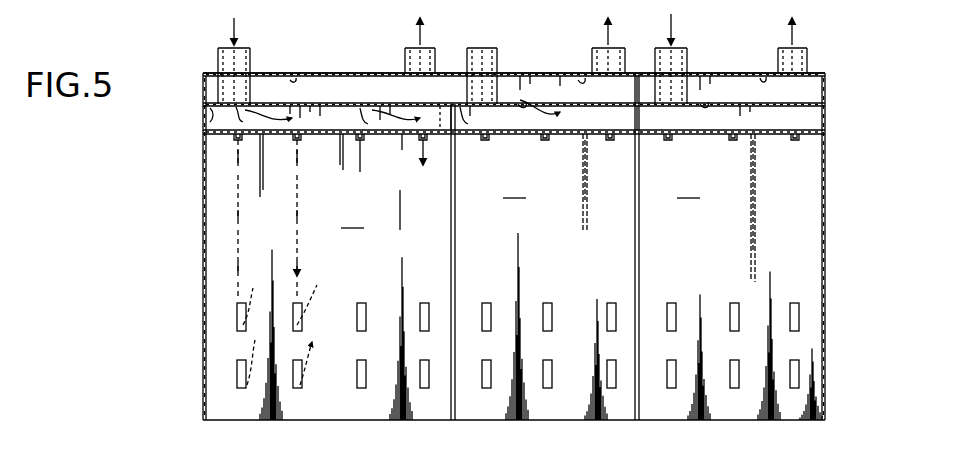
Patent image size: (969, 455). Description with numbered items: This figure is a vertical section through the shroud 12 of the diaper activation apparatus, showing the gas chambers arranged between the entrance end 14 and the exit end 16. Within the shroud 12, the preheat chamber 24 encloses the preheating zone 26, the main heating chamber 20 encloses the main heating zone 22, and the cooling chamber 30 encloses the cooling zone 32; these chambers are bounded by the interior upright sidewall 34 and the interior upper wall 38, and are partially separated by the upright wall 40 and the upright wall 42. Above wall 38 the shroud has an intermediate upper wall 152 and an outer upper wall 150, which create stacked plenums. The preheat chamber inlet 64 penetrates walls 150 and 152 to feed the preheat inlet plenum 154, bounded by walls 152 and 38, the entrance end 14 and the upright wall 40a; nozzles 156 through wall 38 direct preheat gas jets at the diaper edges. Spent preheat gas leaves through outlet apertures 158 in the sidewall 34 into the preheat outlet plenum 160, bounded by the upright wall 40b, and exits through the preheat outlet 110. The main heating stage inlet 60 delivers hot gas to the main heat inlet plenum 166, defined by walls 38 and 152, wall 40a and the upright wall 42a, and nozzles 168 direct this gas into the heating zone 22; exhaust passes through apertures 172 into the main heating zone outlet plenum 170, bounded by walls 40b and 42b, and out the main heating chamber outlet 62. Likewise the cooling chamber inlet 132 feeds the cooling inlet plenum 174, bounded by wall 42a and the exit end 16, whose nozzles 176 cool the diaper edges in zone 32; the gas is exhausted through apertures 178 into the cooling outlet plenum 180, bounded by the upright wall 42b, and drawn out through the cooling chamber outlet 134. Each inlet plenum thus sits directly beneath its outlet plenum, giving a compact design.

The shroud 12 is at (172, 228).
The entrance end 14 is at (203, 281).
The exit end 16 is at (826, 313).
The main heating chamber 20 is at (553, 185).
The main heating zone 22 is at (514, 189).
The preheat chamber 24 is at (315, 173).
The preheating zone 26 is at (330, 262).
The cooling chamber 30 is at (717, 180).
The cooling zone 32 is at (688, 189).
The interior upright sidewall 34 is at (338, 383).
The interior upper wall 38 is at (805, 130).
The upright wall 40 is at (450, 387).
The upright wall 40a is at (457, 118).
The upright wall 40b is at (440, 116).
The upright wall 42 is at (635, 388).
The upright wall 42a is at (641, 118).
The upright wall 42b is at (635, 92).
The main heating stage inlet 60 is at (482, 60).
The main heating chamber outlet 62 is at (610, 50).
The preheat chamber inlet 64 is at (232, 62).
The preheat outlet 110 is at (422, 63).
The cooling chamber inlet 132 is at (677, 50).
The cooling chamber outlet 134 is at (803, 50).
The outer upper wall 150 is at (268, 73).
The intermediate upper wall 152 is at (808, 98).
The preheat inlet plenum 154 is at (212, 117).
The nozzles 156 is at (295, 136).
The outlet apertures 158 is at (243, 385).
The preheat outlet plenum 160 is at (296, 385).
The main heat inlet plenum 166 is at (520, 106).
The nozzles 168 is at (609, 136).
The main heating zone outlet plenum 170 is at (487, 387).
The apertures 172 is at (547, 322).
The cooling inlet plenum 174 is at (703, 106).
The nozzles 176 is at (797, 136).
The apertures 178 is at (793, 322).
The cooling outlet plenum 180 is at (737, 375).